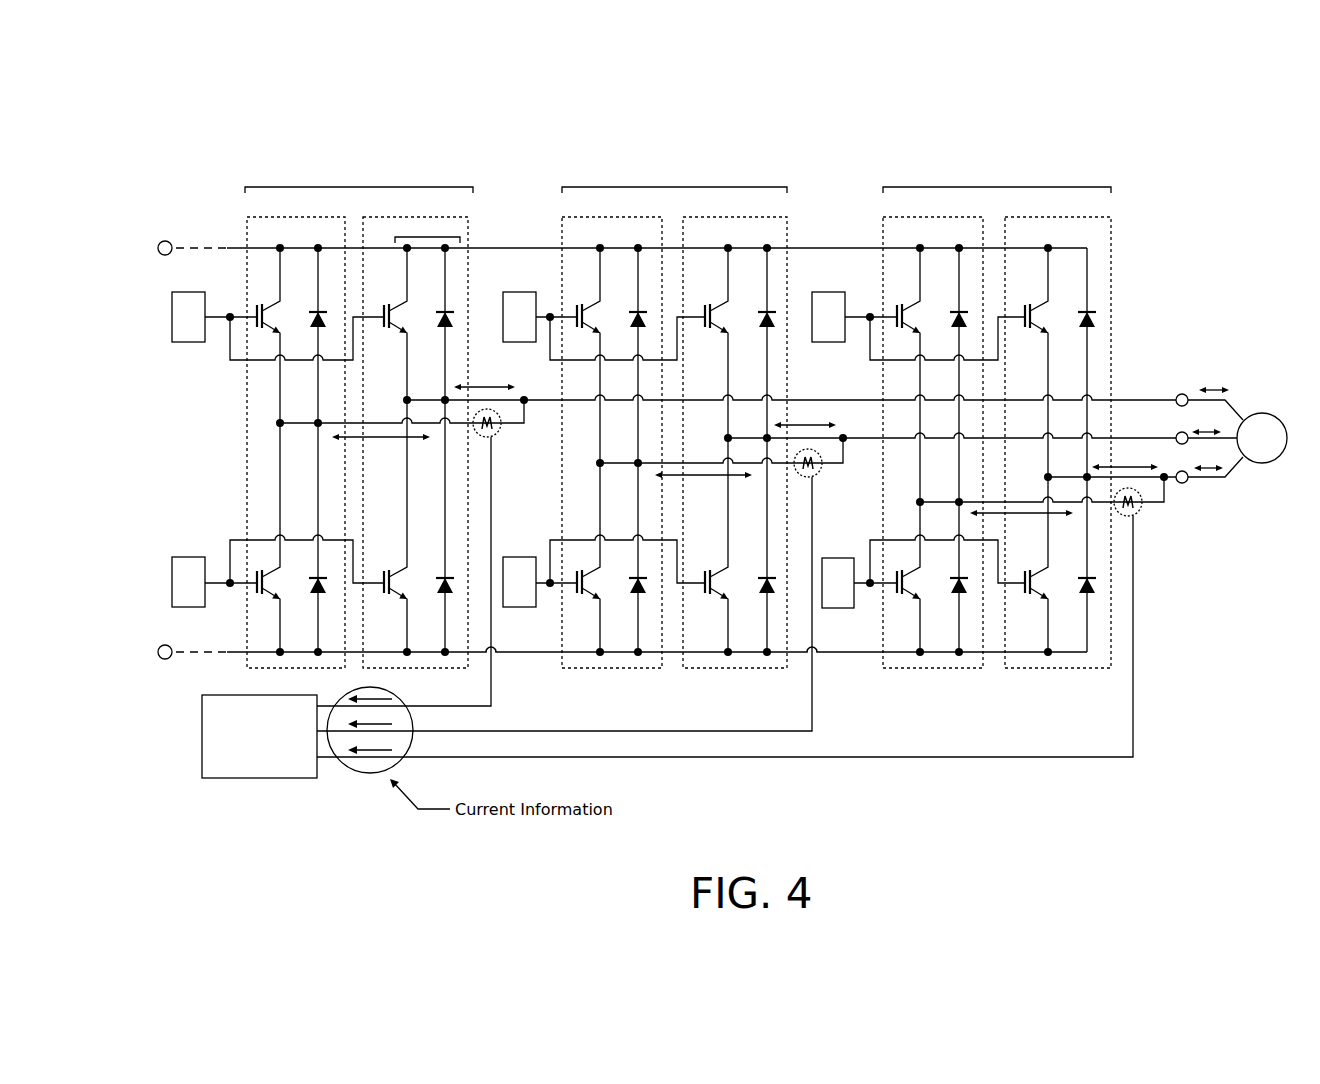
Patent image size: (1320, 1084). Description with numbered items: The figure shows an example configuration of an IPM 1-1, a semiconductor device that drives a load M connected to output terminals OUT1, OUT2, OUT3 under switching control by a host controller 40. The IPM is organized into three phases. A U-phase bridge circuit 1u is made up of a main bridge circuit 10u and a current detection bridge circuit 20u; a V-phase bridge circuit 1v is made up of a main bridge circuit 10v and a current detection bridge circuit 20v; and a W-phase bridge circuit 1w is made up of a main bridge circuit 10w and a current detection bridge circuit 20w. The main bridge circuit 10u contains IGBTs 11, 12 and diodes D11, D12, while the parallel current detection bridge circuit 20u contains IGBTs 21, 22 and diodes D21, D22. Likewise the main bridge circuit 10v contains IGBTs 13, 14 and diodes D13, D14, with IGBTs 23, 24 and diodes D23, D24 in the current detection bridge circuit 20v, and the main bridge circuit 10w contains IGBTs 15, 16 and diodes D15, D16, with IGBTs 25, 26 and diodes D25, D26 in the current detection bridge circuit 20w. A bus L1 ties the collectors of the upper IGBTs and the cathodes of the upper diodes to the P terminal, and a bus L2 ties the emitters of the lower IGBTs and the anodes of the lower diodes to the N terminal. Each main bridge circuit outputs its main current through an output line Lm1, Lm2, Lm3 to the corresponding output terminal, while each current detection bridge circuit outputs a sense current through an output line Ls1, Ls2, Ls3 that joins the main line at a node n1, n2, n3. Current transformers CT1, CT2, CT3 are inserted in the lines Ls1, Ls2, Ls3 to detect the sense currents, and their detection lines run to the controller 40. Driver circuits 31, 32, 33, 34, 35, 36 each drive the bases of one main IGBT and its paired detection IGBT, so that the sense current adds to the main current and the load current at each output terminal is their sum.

The IPM 1-1 is at (720, 118).
The U-phase bridge circuit 1u is at (298, 186).
The V-phase bridge circuit 1v is at (606, 186).
The W-phase bridge circuit 1w is at (924, 186).
The main bridge circuit 10u is at (372, 216).
The main bridge circuit 10v is at (692, 216).
The main bridge circuit 10w is at (1014, 216).
The current detection bridge circuit 20u is at (255, 216).
The current detection bridge circuit 20v is at (570, 216).
The current detection bridge circuit 20w is at (891, 216).
The IGBT 11 is at (392, 324).
The IGBT 12 is at (392, 526).
The IGBT 13 is at (712, 343).
The IGBT 14 is at (712, 545).
The IGBT 15 is at (1032, 362).
The IGBT 16 is at (1031, 564).
The IGBT 21 is at (267, 335).
The IGBT 22 is at (267, 537).
The IGBT 23 is at (587, 355).
The IGBT 24 is at (587, 557).
The IGBT 25 is at (907, 375).
The IGBT 26 is at (907, 577).
The diode D11 is at (433, 324).
The diode D12 is at (433, 526).
The diode D13 is at (754, 343).
The diode D14 is at (754, 545).
The diode D15 is at (1074, 362).
The diode D16 is at (1074, 564).
The diode D21 is at (308, 335).
The diode D22 is at (308, 537).
The diode D23 is at (628, 355).
The diode D24 is at (628, 557).
The diode D25 is at (948, 375).
The diode D26 is at (948, 577).
The driver circuit 31 is at (178, 292).
The driver circuit 32 is at (178, 557).
The driver circuit 33 is at (509, 292).
The driver circuit 34 is at (509, 557).
The driver circuit 35 is at (819, 292).
The driver circuit 36 is at (827, 558).
The controller 40 is at (298, 778).
The bus L1 is at (507, 247).
The bus L2 is at (510, 659).
The output line Ls1 is at (301, 421).
The output line Ls2 is at (621, 460).
The output line Ls3 is at (941, 499).
The output line Lm1 is at (426, 397).
The output line Lm2 is at (861, 436).
The output line Lm3 is at (1068, 475).
The current transformer CT1 is at (499, 438).
The current transformer CT2 is at (820, 470).
The current transformer CT3 is at (1138, 514).
The node n1 is at (530, 404).
The node n2 is at (849, 442).
The node n3 is at (1168, 481).
The output terminal OUT1 is at (1181, 393).
The output terminal OUT2 is at (1177, 431).
The output terminal OUT3 is at (1184, 484).